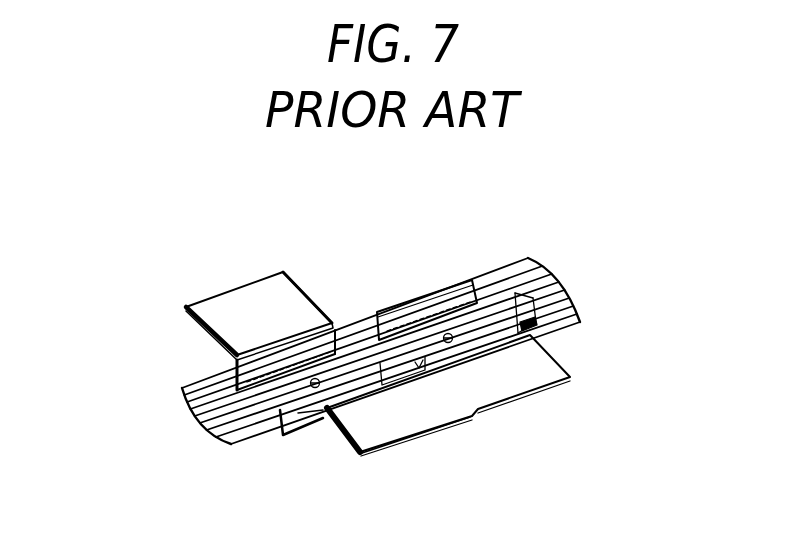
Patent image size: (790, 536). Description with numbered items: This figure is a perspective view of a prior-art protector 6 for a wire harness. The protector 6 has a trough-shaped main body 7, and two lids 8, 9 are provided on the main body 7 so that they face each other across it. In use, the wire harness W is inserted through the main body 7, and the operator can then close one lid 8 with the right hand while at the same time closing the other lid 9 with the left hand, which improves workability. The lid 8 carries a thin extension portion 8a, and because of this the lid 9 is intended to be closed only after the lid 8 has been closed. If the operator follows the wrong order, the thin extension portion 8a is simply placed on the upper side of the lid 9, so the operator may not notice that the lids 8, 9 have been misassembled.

The wire harness W is at (555, 277).
The lid 9 is at (243, 287).
The protector 6 is at (467, 271).
The main body 7 is at (300, 425).
The lid 8 is at (513, 402).
The extension portion 8a is at (407, 437).